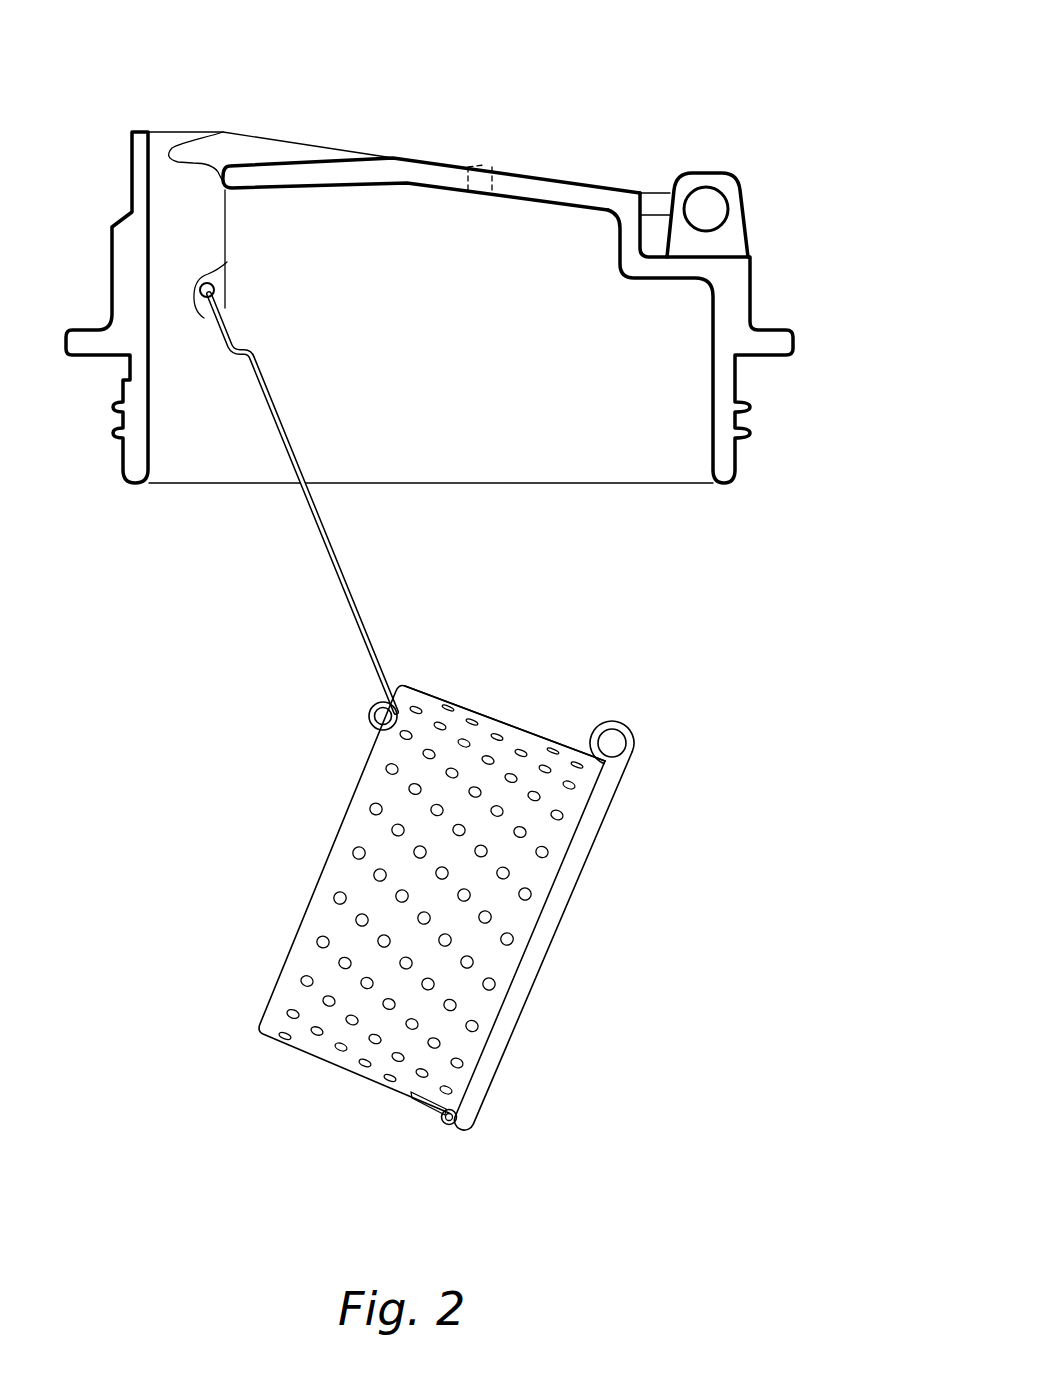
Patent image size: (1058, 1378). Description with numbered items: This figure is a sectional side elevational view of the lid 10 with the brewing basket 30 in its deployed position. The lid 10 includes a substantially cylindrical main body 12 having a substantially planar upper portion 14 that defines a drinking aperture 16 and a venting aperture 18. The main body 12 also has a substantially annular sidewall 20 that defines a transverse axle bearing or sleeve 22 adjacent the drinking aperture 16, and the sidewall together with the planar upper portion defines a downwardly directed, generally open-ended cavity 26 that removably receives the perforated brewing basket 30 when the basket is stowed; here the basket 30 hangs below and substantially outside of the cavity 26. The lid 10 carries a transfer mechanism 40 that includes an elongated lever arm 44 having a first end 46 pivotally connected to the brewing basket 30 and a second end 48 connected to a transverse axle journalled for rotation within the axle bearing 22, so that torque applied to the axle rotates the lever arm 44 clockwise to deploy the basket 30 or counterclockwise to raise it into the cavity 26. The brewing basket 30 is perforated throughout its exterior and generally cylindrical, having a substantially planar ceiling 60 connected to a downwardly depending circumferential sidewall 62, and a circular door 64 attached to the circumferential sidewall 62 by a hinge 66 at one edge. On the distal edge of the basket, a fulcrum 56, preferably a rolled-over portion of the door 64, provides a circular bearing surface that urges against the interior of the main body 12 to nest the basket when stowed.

The lid 10 is at (694, 20).
The main body 12 is at (795, 340).
The upper portion 14 is at (533, 178).
The drinking aperture 16 is at (168, 138).
The venting aperture 18 is at (481, 165).
The annular sidewall 20 is at (752, 259).
The axle bearing 22 is at (215, 290).
The cavity 26 is at (521, 574).
The brewing basket 30 is at (257, 1033).
The transfer mechanism 40 is at (270, 601).
The lever arm 44 is at (340, 561).
The first end 46 is at (369, 716).
The second end 48 is at (227, 262).
The fulcrum 56 is at (637, 738).
The ceiling 60 is at (325, 854).
The circumferential sidewall 62 is at (483, 717).
The door 64 is at (554, 950).
The hinge 66 is at (449, 1126).